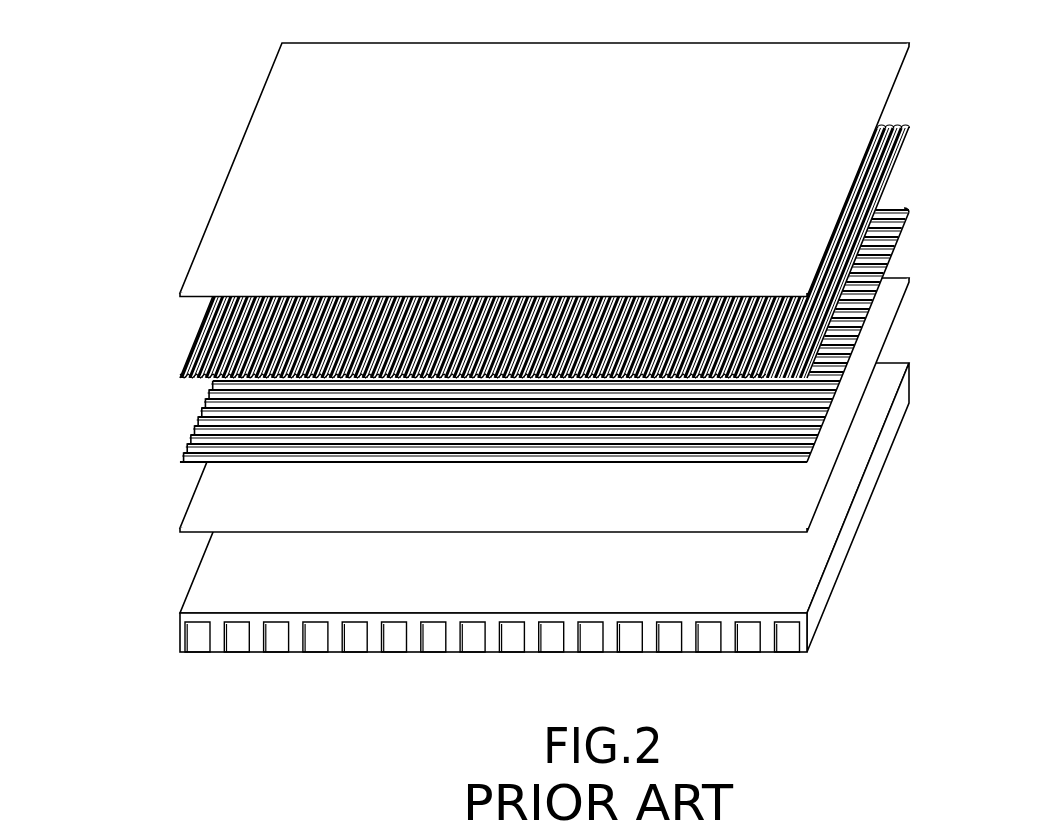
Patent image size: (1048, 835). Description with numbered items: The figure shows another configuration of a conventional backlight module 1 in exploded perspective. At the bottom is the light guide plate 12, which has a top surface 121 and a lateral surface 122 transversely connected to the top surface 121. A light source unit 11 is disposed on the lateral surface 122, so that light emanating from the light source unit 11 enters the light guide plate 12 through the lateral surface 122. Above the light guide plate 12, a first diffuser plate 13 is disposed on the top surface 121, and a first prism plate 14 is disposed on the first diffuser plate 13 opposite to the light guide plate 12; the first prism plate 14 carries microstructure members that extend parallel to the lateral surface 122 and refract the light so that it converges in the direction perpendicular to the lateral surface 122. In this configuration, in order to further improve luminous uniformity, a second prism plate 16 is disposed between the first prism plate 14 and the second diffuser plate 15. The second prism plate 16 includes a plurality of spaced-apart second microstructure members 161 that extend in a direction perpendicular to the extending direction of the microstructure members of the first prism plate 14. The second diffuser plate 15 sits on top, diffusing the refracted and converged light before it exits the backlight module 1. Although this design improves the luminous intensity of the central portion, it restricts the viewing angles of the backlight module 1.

The backlight module 1 is at (546, 382).
The light source unit 11 is at (394, 656).
The light guide plate 12 is at (515, 560).
The top surface 121 is at (808, 540).
The lateral surface 122 is at (451, 665).
The first diffuser plate 13 is at (208, 498).
The first prism plate 14 is at (197, 427).
The second diffuser plate 15 is at (258, 154).
The second prism plate 16 is at (599, 229).
The second microstructure members 161 is at (907, 125).